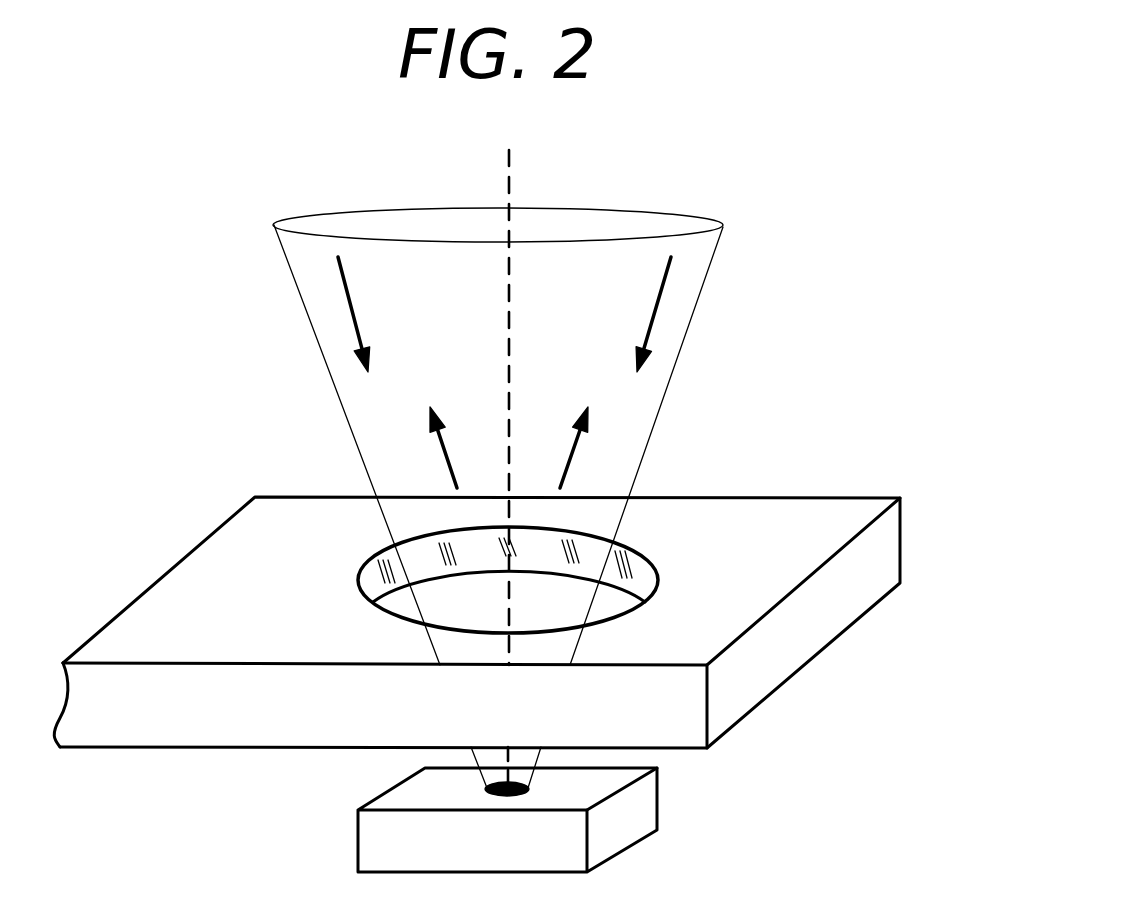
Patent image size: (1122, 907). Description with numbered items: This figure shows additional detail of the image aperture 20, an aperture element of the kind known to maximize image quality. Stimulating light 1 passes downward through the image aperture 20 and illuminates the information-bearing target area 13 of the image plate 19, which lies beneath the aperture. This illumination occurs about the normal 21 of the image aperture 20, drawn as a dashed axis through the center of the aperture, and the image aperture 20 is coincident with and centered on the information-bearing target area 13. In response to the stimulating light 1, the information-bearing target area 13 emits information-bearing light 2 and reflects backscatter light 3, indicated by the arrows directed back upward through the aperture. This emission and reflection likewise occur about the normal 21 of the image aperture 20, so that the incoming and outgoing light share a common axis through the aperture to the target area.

The stimulating light 1 is at (350, 302).
The information-bearing light 2 is at (443, 450).
The backscatter light 3 is at (577, 450).
The information-bearing target area 13 is at (490, 788).
The image plate 19 is at (635, 810).
The image aperture 20 is at (658, 581).
The normal 21 is at (509, 152).